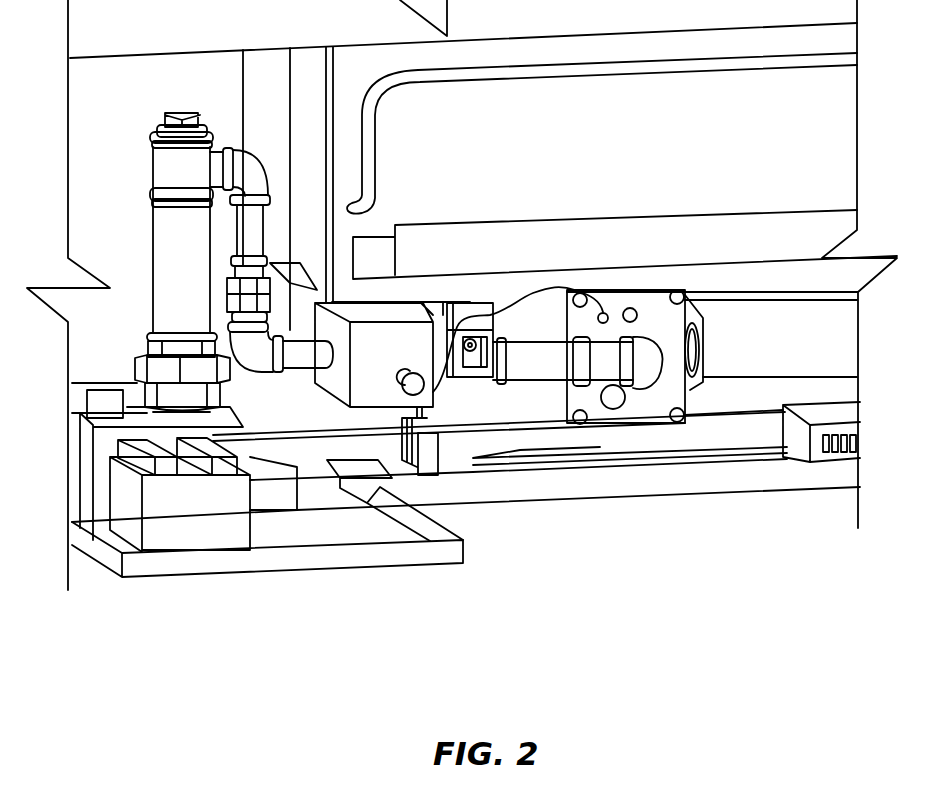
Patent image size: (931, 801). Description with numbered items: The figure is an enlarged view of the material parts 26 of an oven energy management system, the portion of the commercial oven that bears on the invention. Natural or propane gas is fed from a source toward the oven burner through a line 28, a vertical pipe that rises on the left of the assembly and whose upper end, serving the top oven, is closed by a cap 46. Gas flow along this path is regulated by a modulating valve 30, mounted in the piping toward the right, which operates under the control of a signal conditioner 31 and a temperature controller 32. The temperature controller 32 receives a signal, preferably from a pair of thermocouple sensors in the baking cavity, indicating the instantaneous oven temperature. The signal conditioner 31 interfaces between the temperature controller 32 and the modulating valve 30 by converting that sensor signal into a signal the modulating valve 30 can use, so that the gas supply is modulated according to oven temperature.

The material parts of the oven energy management system 26 is at (857, 632).
The line 28 is at (153, 318).
The modulating valve 30 is at (473, 370).
The signal conditioner 31 is at (428, 450).
The temperature controller 32 is at (198, 512).
The cap 46 is at (173, 110).